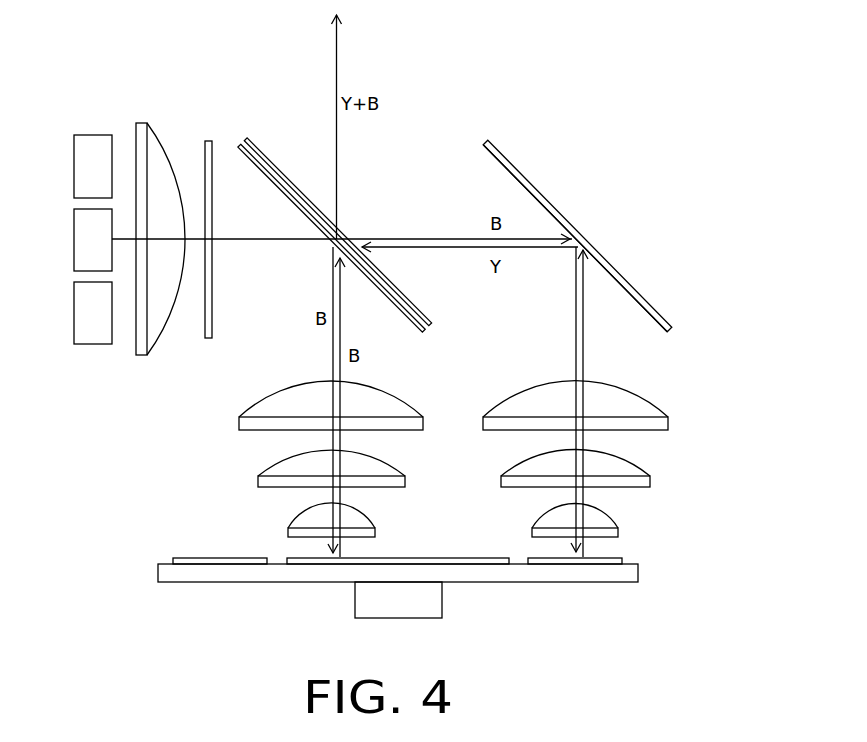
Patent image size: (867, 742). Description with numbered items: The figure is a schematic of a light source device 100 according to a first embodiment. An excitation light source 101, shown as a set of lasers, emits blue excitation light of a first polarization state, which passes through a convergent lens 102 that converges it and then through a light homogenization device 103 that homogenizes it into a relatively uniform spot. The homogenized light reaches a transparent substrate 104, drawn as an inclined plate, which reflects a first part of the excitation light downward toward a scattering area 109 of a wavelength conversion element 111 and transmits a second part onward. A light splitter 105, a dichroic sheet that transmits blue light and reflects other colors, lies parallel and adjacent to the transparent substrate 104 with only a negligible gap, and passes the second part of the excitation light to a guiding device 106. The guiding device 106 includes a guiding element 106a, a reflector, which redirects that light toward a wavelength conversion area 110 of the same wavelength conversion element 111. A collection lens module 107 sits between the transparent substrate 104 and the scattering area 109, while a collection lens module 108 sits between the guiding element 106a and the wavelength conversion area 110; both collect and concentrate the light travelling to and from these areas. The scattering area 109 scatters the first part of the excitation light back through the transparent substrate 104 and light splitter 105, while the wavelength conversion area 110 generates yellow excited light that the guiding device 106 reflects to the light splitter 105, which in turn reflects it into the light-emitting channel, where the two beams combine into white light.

The light source device 100 is at (491, 63).
The excitation light source 101 is at (92, 357).
The convergent lens 102 is at (142, 117).
The light homogenization device 103 is at (208, 345).
The transparent substrate 104 is at (407, 330).
The light splitter 105 is at (347, 228).
The guiding device 106 is at (578, 222).
The guiding element 106a is at (618, 282).
The collection lens module 107 is at (568, 270).
The collection lens module 108 is at (662, 462).
The scattering area 109 is at (397, 557).
The wavelength conversion area 110 is at (615, 552).
The wavelength conversion element 111 is at (457, 605).